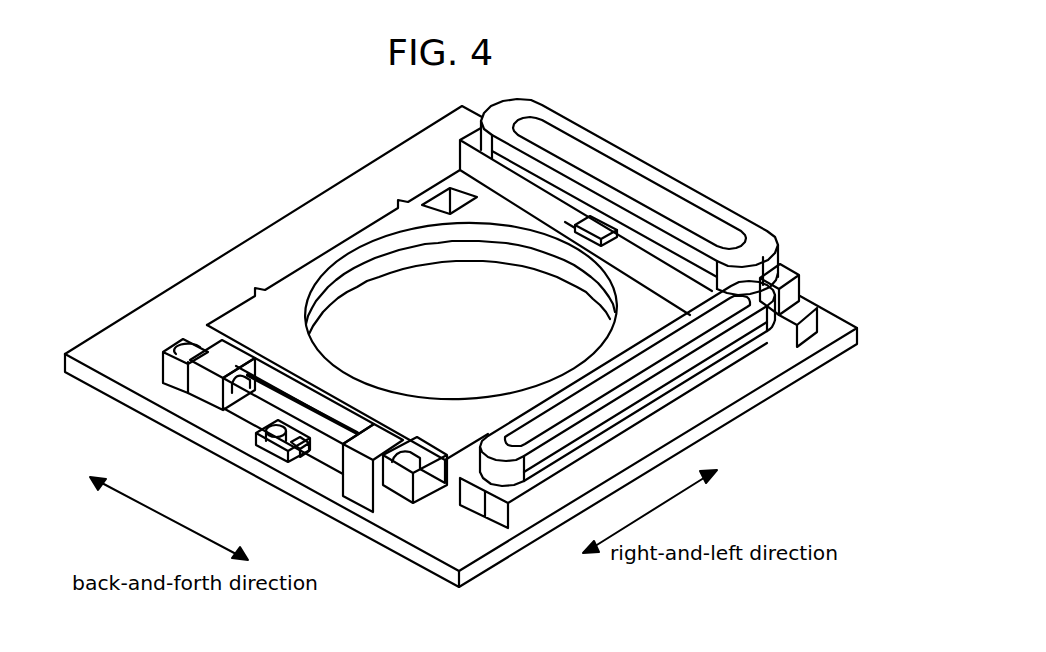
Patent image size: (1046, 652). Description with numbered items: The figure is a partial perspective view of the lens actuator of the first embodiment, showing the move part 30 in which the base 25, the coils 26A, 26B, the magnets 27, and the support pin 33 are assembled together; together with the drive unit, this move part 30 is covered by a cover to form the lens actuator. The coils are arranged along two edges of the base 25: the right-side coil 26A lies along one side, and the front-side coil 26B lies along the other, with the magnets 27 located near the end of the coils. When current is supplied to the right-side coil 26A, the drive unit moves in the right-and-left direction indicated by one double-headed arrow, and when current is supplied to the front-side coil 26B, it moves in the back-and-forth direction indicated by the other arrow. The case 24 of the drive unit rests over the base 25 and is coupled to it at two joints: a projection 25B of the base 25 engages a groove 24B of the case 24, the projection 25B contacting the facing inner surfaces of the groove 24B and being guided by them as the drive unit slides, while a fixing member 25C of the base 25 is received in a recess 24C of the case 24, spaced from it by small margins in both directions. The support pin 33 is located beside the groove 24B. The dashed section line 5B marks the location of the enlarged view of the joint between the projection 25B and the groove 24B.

The case 24 is at (310, 260).
The groove 24B is at (300, 447).
The recess 24C is at (595, 228).
The base 25 is at (385, 538).
The projection 25B is at (273, 441).
The fixing member 25C is at (597, 230).
The right-side coil 26A is at (673, 188).
The front-side coil 26B is at (650, 390).
The magnets 27 is at (780, 350).
The move part 30 is at (603, 132).
The support pin 33 is at (257, 390).
The section line 5B- 5B is at (205, 218).